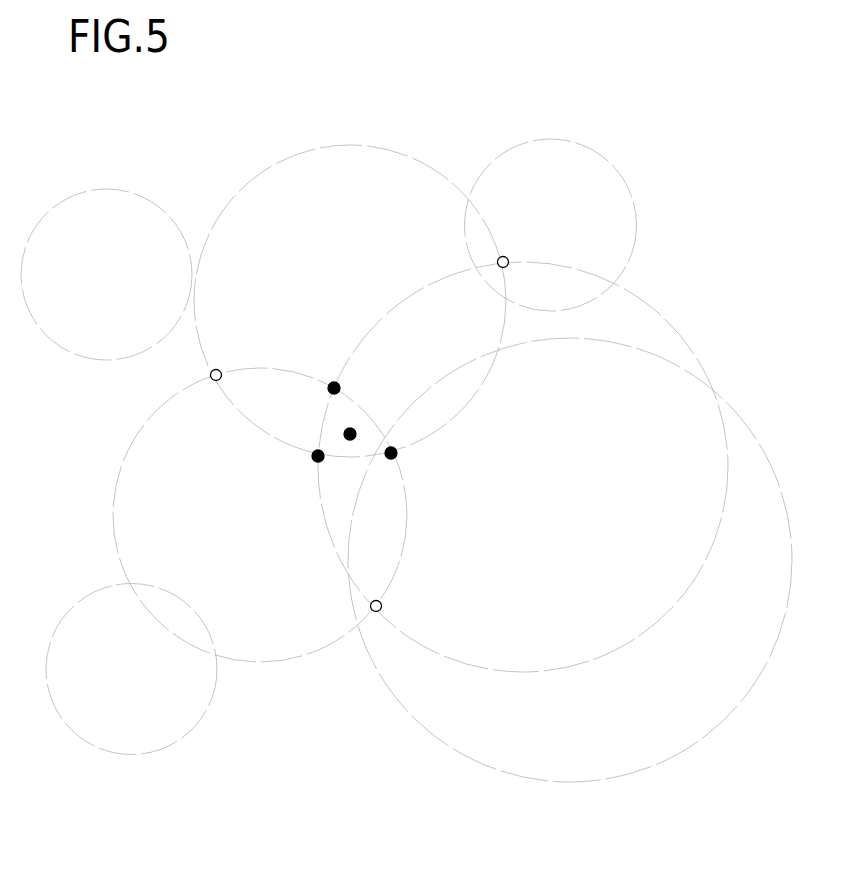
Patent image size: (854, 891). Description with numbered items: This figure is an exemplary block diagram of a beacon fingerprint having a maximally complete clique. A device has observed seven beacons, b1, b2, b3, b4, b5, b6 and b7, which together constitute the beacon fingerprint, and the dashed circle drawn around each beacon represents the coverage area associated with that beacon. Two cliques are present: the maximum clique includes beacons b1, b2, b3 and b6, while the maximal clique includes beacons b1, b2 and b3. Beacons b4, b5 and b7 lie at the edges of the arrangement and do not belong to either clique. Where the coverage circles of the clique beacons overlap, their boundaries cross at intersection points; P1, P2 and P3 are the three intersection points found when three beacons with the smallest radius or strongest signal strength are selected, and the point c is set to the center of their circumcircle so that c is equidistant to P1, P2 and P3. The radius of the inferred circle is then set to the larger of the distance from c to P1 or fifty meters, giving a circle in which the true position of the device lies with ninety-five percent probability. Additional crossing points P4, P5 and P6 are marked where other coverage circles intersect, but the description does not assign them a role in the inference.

The beacon b1 is at (523, 467).
The beacon b2 is at (260, 515).
The beacon b3 is at (350, 301).
The beacon b4 is at (131, 669).
The beacon b5 is at (551, 225).
The beacon b6 is at (658, 763).
The beacon b7 is at (106, 274).
The intersection point P1 is at (408, 463).
The intersection point P2 is at (307, 468).
The intersection point P3 is at (319, 399).
The intersection point P4 is at (200, 371).
The intersection point P5 is at (517, 252).
The intersection point P6 is at (378, 625).
The center of inferred circle c is at (343, 433).